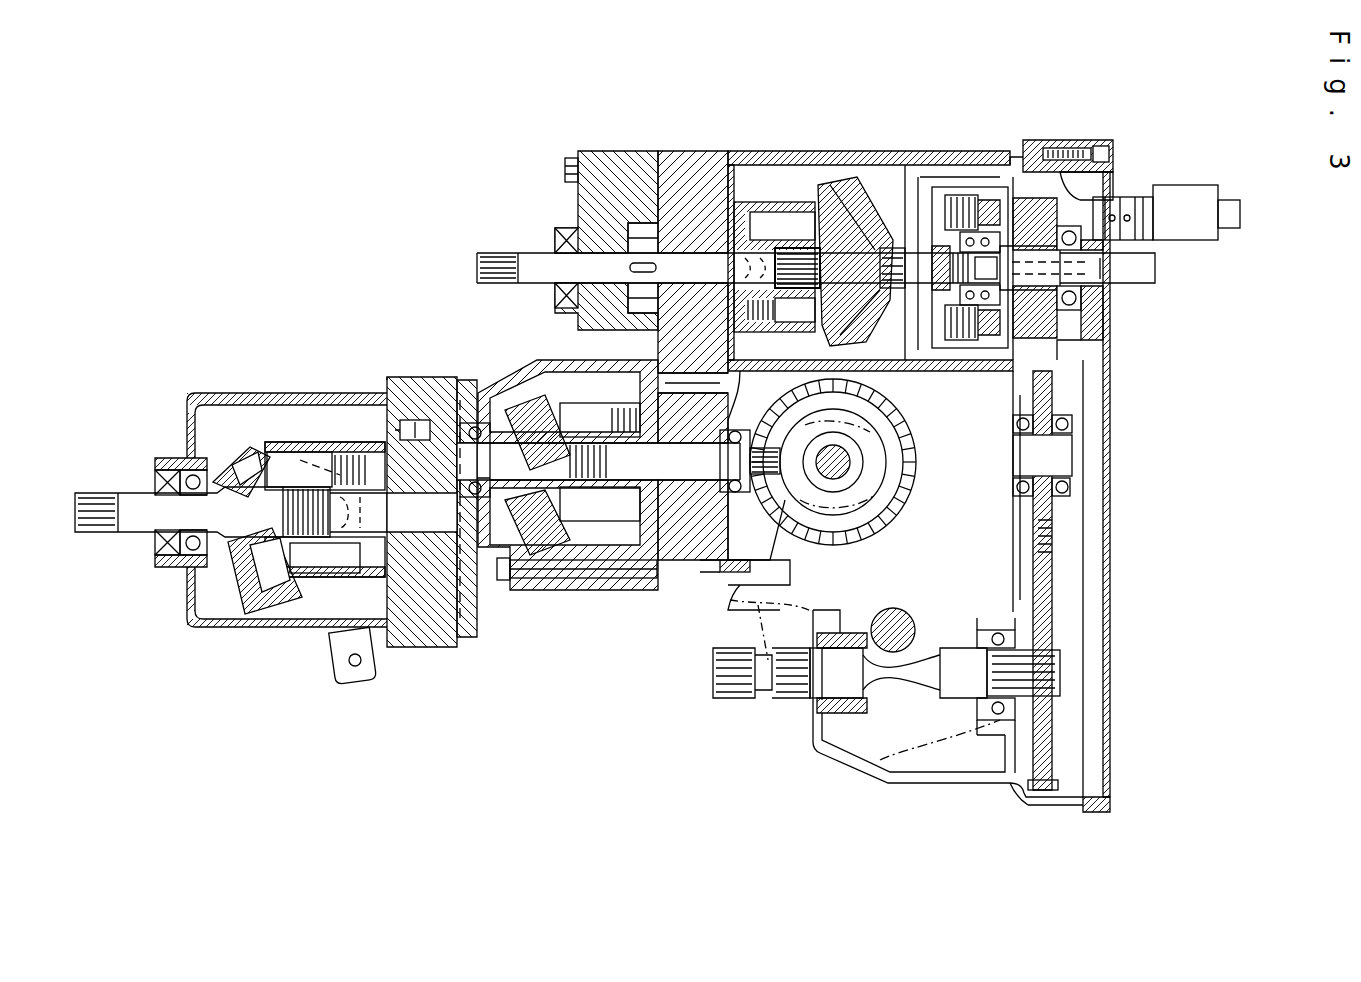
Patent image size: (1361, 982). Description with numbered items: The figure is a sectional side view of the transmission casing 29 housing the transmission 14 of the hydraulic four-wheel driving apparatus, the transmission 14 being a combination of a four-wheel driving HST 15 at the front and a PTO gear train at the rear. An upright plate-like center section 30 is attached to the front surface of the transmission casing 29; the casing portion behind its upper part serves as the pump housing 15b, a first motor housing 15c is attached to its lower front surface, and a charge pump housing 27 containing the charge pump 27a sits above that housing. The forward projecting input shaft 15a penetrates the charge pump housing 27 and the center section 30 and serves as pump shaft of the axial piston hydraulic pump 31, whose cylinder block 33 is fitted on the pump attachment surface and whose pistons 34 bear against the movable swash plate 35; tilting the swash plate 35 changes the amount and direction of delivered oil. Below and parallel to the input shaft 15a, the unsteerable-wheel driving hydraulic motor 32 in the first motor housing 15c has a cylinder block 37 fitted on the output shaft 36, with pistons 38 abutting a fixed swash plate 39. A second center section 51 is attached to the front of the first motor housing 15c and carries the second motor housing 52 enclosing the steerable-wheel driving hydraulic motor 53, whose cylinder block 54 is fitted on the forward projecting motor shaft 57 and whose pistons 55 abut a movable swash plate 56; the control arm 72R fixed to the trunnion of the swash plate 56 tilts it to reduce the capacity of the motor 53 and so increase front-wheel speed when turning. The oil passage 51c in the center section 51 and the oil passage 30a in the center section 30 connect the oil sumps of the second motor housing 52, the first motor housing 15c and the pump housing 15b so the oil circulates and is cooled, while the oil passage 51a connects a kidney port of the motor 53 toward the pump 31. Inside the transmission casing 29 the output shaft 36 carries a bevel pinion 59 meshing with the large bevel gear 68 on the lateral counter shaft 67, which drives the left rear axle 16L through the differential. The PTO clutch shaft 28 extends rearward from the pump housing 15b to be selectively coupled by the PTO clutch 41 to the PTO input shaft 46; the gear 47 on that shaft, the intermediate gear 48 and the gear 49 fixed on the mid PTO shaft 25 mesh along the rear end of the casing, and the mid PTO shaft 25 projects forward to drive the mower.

The transmission 14 is at (715, 618).
The HST 15 is at (405, 152).
The input shaft 15a is at (487, 252).
The pump housing 15b is at (908, 175).
The first motor housing 15c is at (480, 385).
The left rear axle 16L is at (908, 618).
The mid PTO shaft 25 is at (738, 700).
The charge pump housing 27 is at (588, 205).
The charge pump 27a is at (632, 222).
The PTO clutch shaft 28 is at (900, 300).
The transmission casing 29 is at (943, 782).
The center section 30 is at (678, 150).
The oil passage 30a is at (730, 340).
The hydraulic pump 31 is at (770, 195).
The unsteerable-wheel driving hydraulic motor 32 is at (630, 530).
The cylinder block 33 is at (748, 200).
The pistons 34 is at (832, 190).
The movable swash plate 35 is at (860, 188).
The unsteerable-wheel driving output shaft 36 is at (487, 540).
The cylinder block 37 is at (580, 395).
The pistons 38 is at (555, 400).
The fixed swash plate 39 is at (552, 585).
The PTO clutch 41 is at (1008, 190).
The PTO input shaft 46 is at (1140, 268).
The gear 47 is at (1060, 308).
The gear 48 is at (1062, 385).
The gear 49 is at (1060, 612).
The center section 51 is at (422, 650).
The oil passage 51a is at (448, 650).
The oil passage 51c is at (412, 410).
The second motor housing 52 is at (197, 632).
The steerable-wheel driving hydraulic motor 53 is at (232, 438).
The cylinder block 54 is at (342, 444).
The pistons 55 is at (262, 445).
The movable swash plate 56 is at (270, 610).
The steerable-wheel driving output shaft 57 is at (125, 533).
The bevel pinion 59 is at (795, 540).
The counter shaft 67 is at (850, 455).
The large bevel gear 68 is at (905, 478).
The right control arm 72R is at (360, 682).